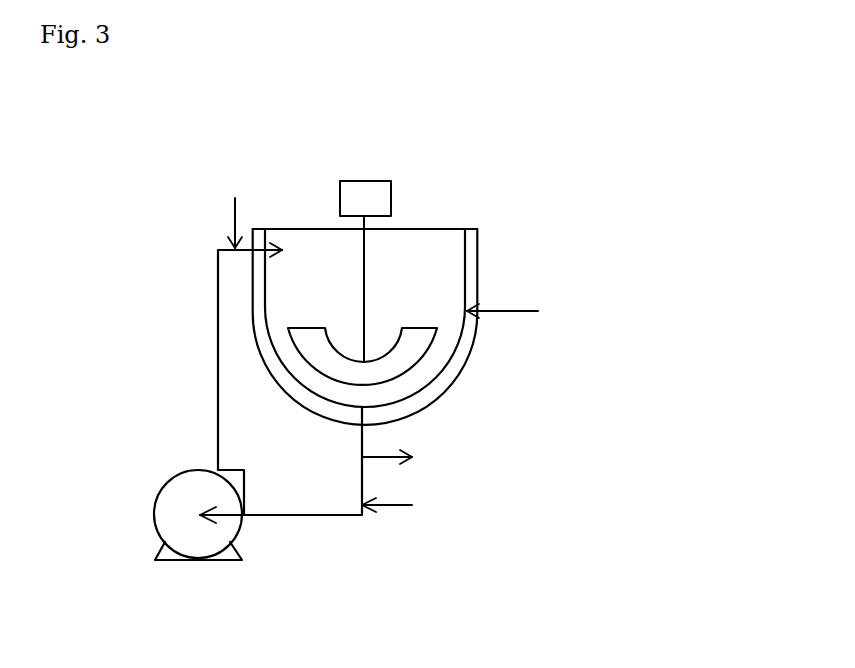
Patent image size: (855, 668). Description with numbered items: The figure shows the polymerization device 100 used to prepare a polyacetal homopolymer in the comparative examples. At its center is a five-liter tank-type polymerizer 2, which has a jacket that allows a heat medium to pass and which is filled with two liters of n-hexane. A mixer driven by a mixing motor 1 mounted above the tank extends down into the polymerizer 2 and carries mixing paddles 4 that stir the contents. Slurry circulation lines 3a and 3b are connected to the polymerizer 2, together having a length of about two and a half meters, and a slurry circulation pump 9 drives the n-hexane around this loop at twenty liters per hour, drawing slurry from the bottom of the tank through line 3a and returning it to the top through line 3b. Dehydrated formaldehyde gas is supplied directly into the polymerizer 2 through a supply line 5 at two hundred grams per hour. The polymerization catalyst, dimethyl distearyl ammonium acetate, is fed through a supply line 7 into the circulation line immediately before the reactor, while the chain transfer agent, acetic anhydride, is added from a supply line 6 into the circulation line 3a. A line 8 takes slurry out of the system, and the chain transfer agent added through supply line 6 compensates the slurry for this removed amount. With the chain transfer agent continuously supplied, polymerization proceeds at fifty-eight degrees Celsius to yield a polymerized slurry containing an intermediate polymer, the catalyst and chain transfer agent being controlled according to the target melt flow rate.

The polymerization device 100 is at (595, 174).
The mixing motor 1 is at (391, 195).
The tank-type polymerizer 2 is at (477, 332).
The slurry circulation line 3a is at (265, 515).
The slurry circulation line 3b is at (218, 412).
The mixing paddles 4 is at (430, 362).
The supply line 5 is at (538, 311).
The supply line 6 is at (398, 505).
The supply line 7 is at (233, 218).
The line 8 is at (387, 457).
The slurry circulation pump 9 is at (155, 532).